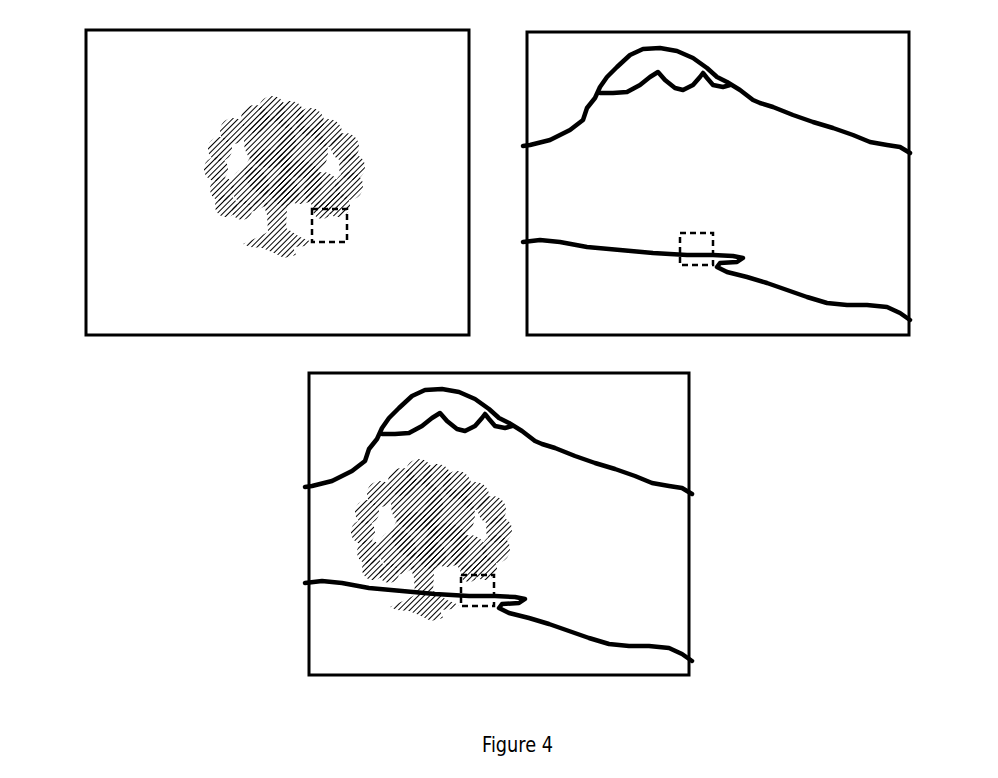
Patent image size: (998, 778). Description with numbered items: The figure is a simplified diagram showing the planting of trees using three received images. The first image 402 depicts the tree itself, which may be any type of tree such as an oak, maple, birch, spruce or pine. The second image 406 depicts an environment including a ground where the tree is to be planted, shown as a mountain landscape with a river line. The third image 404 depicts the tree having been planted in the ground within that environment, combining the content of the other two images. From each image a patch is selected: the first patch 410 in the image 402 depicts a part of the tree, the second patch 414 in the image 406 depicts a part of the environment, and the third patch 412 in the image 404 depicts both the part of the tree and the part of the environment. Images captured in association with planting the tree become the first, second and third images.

The image 402 is at (86, 97).
The image 404 is at (689, 415).
The image 406 is at (909, 72).
The patch 410 is at (347, 228).
The patch 412 is at (481, 607).
The patch 414 is at (700, 266).